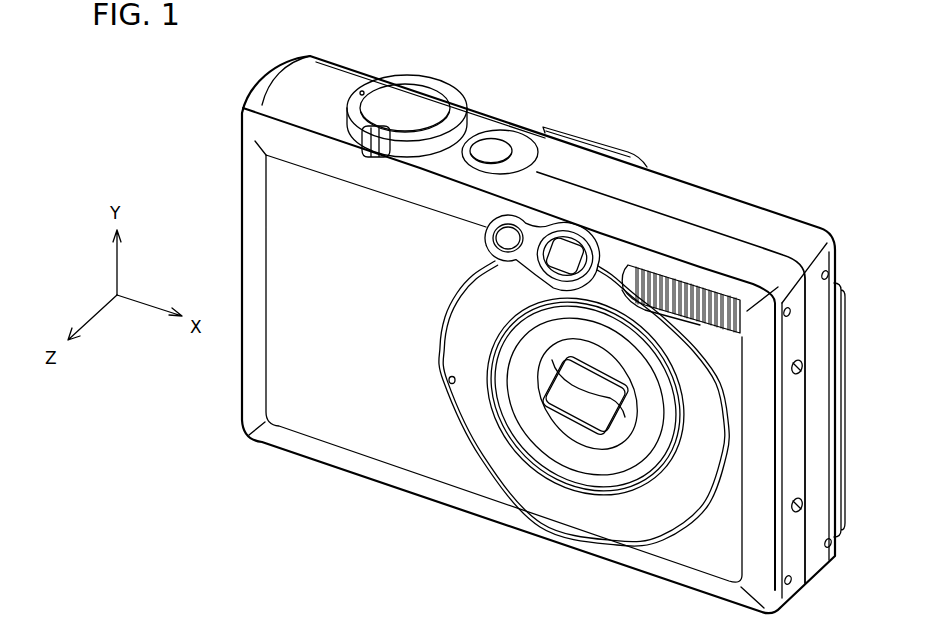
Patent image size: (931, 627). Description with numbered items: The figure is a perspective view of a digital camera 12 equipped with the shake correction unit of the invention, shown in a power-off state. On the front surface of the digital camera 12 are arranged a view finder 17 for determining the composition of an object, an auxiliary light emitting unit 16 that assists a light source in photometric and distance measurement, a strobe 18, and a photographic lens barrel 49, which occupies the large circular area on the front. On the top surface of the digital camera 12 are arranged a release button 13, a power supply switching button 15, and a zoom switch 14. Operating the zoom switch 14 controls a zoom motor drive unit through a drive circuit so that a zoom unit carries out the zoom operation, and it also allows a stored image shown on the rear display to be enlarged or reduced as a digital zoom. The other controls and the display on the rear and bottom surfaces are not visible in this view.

The digital camera 12 is at (357, 432).
The release button 13 is at (415, 100).
The zoom switch 14 is at (453, 100).
The power supply switching button 15 is at (492, 145).
The auxiliary light emitting unit 16 is at (511, 236).
The view finder 17 is at (567, 257).
The strobe 18 is at (675, 287).
The photographic lens barrel 49 is at (563, 452).